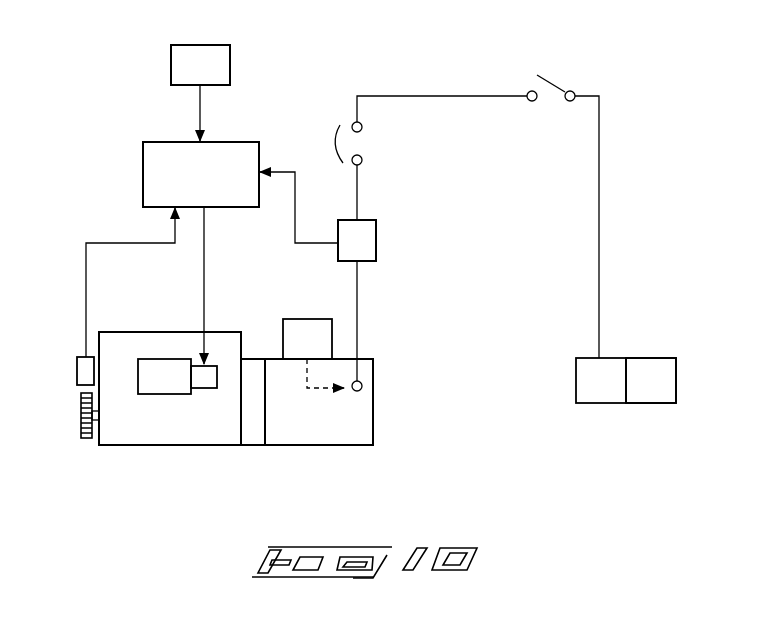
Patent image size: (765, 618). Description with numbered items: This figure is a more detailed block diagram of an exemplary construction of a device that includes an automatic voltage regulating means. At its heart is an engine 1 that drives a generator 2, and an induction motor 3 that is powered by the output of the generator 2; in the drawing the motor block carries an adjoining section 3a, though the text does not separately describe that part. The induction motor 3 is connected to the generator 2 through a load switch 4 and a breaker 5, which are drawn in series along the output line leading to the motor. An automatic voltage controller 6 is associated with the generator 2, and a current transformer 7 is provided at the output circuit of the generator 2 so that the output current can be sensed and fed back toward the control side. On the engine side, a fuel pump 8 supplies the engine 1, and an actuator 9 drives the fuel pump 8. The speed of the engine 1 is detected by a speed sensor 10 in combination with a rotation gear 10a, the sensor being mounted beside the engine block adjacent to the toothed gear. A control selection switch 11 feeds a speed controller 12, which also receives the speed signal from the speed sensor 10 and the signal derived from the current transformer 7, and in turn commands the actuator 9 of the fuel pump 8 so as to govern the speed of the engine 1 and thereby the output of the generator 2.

The engine 1 is at (168, 430).
The generator 2 is at (345, 427).
The induction motor 3 is at (592, 395).
The power section (P) 3a is at (653, 367).
The load switch 4 is at (555, 99).
The breaker 5 is at (353, 139).
The automatic voltage controller 6 is at (316, 341).
The current transformer 7 is at (362, 242).
The fuel pump 8 is at (157, 367).
The actuator 9 is at (208, 375).
The speed sensor 10 is at (85, 373).
The rotation gear 10a is at (80, 426).
The control selection switch 11 is at (198, 57).
The speed controller 12 is at (152, 175).